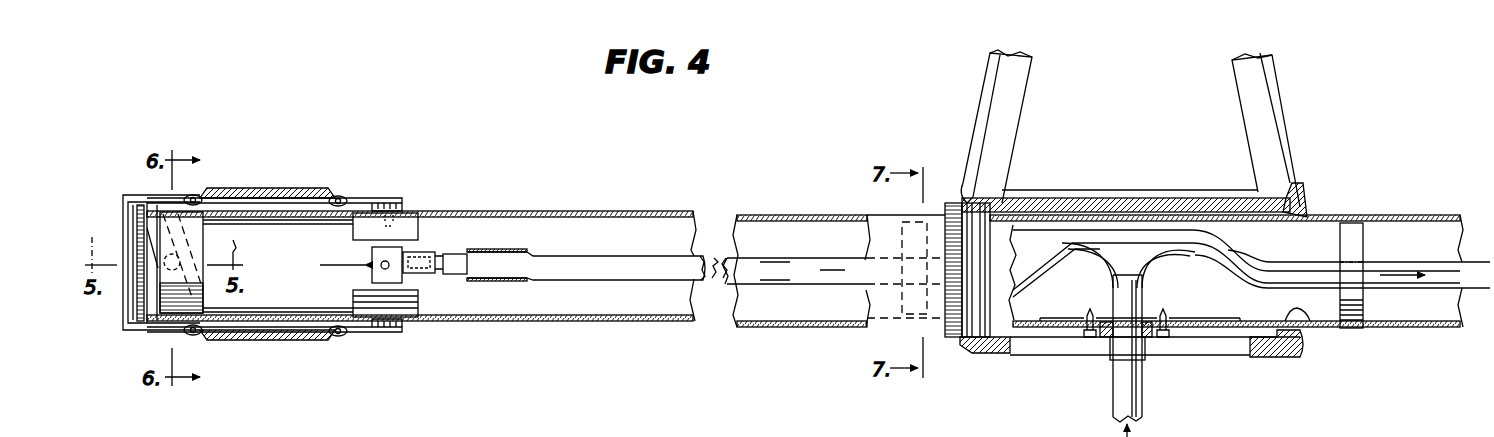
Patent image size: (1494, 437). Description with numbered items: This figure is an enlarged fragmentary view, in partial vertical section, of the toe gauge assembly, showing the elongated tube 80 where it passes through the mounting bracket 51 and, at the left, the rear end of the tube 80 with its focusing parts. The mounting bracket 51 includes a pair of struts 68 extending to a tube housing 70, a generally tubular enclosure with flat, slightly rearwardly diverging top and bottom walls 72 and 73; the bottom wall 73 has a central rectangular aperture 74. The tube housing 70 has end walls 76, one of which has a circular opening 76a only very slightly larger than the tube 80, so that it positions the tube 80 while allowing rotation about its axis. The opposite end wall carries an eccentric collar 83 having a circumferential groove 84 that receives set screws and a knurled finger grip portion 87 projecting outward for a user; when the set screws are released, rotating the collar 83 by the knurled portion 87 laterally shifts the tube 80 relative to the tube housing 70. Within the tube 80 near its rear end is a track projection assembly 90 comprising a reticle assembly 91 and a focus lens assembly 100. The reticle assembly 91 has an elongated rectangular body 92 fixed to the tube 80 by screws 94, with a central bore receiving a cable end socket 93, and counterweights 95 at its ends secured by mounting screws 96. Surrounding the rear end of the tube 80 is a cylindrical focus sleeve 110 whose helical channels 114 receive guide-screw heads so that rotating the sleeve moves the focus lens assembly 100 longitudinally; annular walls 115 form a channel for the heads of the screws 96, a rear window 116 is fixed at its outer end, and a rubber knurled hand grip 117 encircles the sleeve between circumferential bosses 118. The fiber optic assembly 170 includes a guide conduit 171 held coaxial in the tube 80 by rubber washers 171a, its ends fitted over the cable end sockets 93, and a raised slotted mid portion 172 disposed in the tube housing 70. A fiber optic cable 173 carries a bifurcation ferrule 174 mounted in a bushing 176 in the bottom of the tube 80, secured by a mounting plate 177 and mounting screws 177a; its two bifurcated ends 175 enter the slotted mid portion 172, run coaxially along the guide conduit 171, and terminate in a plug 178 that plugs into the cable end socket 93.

The mounting bracket 51 is at (1305, 124).
The struts 68 is at (993, 72).
The tube housing 70 is at (1282, 360).
The top wall 72 is at (1118, 205).
The bottom wall 73 is at (990, 355).
The rectangular aperture 74 is at (1010, 355).
The end walls 76 is at (1305, 208).
The circular opening 76a is at (1300, 320).
The tube 80 is at (590, 211).
The eccentric collar 83 is at (949, 342).
The circumferential groove 84 is at (977, 310).
The knurled finger grip portion 87 is at (953, 203).
The track projection assembly 90 is at (300, 232).
The reticle assembly 91 is at (410, 230).
The rectangular body 92 is at (372, 270).
The cable end socket 93 is at (427, 258).
The screws 94 is at (403, 280).
The counterweights 95 is at (362, 230).
The mounting screws 96 is at (382, 200).
The focus lens assembly 100 is at (207, 230).
The focus sleeve 110 is at (135, 190).
The helical channel 114 is at (143, 225).
The annular walls 115 is at (352, 198).
The rear window 116 is at (128, 297).
The rubber knurled hand grip 117 is at (283, 190).
The circumferential bosses 118 is at (193, 336).
The fiber optic assembly 170 is at (1156, 379).
The guide conduit 171 is at (640, 255).
The rubber washers 171a is at (890, 222).
The slotted mid portion 172 is at (1173, 232).
The fiber optic cable 173 is at (1118, 395).
The bifurcation ferrule 174 is at (1143, 296).
The bifurcated ends 175 is at (1125, 250).
The bushing 176 is at (1150, 320).
The mounting plate 177 is at (1076, 337).
The mounting screws 177a is at (1085, 318).
The plug 178 is at (465, 272).